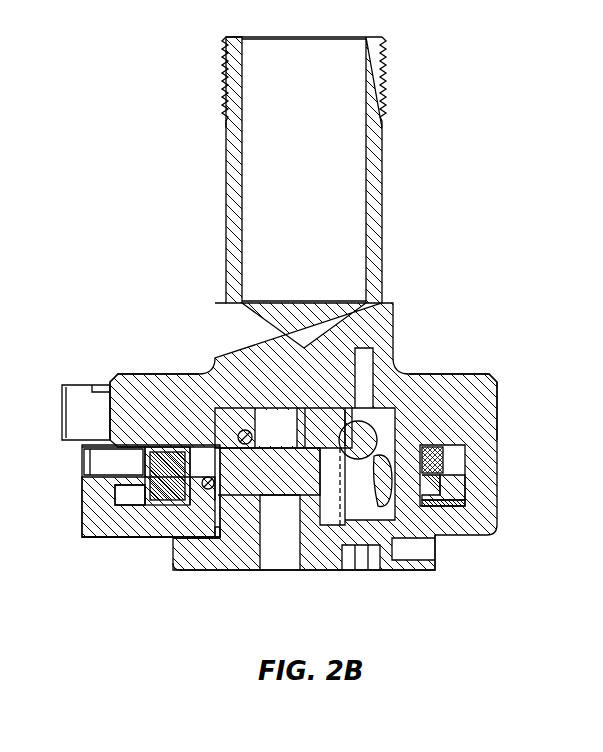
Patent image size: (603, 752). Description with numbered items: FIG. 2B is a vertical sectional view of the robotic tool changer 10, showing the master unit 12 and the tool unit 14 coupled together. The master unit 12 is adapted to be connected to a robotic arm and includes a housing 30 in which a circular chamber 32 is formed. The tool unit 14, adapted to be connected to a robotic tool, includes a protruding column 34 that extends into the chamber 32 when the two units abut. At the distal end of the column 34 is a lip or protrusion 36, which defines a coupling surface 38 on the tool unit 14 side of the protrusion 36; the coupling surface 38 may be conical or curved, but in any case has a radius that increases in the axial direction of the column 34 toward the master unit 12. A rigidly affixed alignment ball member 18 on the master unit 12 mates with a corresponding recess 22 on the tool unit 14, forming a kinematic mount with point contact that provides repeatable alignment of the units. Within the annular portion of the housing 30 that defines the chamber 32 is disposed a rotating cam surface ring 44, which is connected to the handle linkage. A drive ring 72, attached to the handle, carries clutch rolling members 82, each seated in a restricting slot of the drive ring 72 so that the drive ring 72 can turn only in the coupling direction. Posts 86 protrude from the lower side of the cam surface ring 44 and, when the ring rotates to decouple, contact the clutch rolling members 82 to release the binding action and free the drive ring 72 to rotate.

The robotic tool changer 10 is at (163, 336).
The master unit 12 is at (438, 338).
The tool unit 14 is at (395, 592).
The alignment ball member 18 is at (362, 440).
The recess 22 is at (455, 508).
The housing 30 is at (467, 373).
The circular chamber 32 is at (221, 418).
The protruding column 34 is at (263, 479).
The protrusion 36 is at (213, 443).
The coupling surface 38 is at (200, 530).
The rotating cam surface ring 44 is at (147, 493).
The drive ring 72 is at (140, 473).
The clutch rolling member 82 is at (432, 458).
The post 86 is at (165, 464).